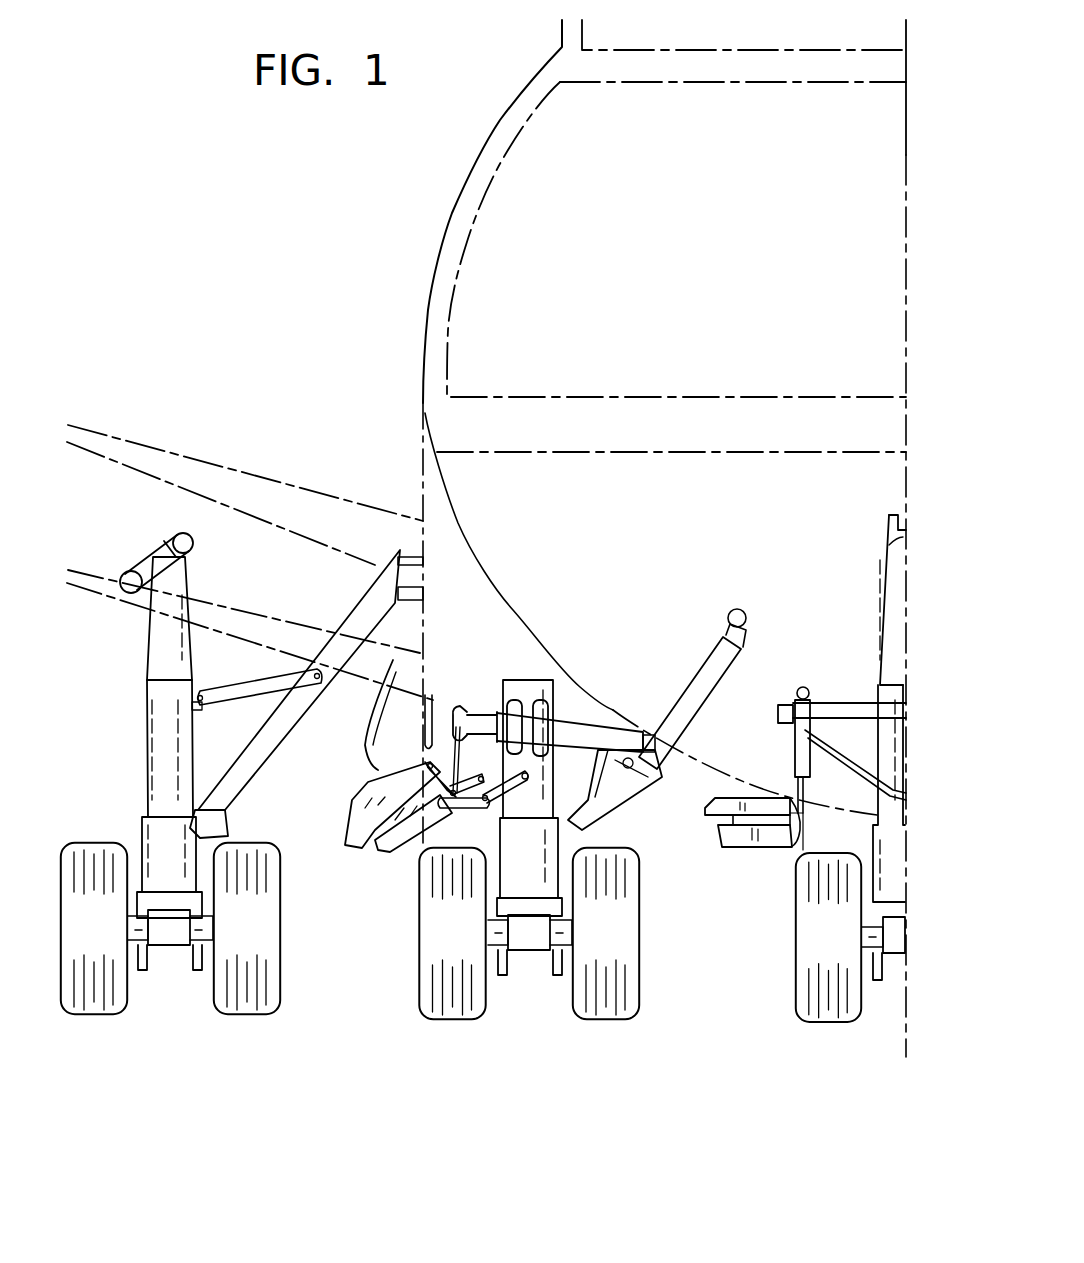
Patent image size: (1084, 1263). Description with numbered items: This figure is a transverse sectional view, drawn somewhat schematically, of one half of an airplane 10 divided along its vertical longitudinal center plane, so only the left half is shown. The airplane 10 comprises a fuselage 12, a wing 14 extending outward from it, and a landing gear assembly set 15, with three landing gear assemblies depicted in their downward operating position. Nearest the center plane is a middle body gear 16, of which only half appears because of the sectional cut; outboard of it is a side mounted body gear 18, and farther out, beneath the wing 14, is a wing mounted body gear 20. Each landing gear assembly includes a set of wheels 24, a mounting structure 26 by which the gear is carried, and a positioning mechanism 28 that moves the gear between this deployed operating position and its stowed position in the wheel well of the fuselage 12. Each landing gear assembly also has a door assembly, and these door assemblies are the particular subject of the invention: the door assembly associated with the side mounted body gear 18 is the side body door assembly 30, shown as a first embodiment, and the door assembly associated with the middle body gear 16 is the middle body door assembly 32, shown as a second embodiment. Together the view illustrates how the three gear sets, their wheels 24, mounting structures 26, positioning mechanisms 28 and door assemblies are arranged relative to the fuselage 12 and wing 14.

The airplane 10 is at (442, 200).
The fuselage 12 is at (447, 250).
The wing 14 is at (167, 450).
The landing gear assembly set 15 is at (207, 903).
The middle body gear 16 is at (813, 1033).
The side mounted body gear 18 is at (538, 1027).
The wing mounted body gear 20 is at (167, 1027).
The set of wheels 24 is at (263, 925).
The mounting structure 26 is at (152, 718).
The positioning mechanism 28 is at (340, 620).
The side body door assembly 30 is at (350, 793).
The middle body door assembly 32 is at (747, 843).